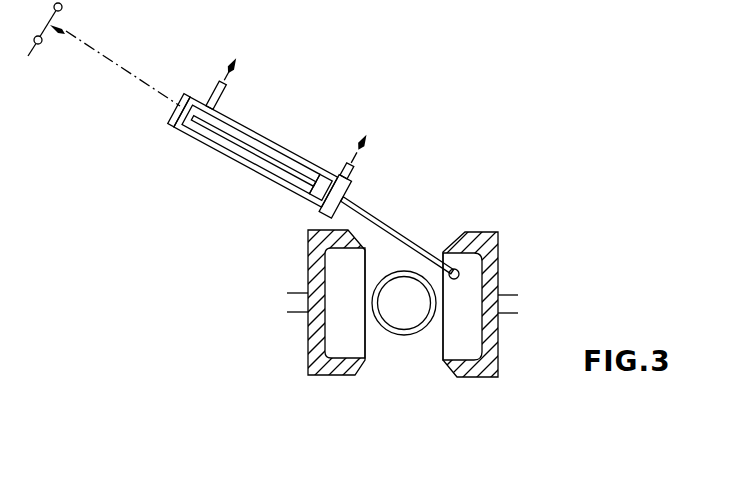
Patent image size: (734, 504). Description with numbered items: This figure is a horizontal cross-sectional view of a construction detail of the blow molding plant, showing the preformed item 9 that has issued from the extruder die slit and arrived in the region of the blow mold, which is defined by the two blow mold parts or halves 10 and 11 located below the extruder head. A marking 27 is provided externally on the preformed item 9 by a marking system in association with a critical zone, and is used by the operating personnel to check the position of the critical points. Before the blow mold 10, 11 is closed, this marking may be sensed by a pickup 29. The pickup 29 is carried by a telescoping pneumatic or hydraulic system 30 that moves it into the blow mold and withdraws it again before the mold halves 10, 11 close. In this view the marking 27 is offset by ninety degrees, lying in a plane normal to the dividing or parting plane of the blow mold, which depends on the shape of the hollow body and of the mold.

The preformed item 9 is at (405, 335).
The blow mold half 10 is at (337, 368).
The blow mold half 11 is at (487, 366).
The marking 27 is at (443, 303).
The pickup 29 is at (457, 268).
The telescoping pneumatic or hydraulic system 30 is at (287, 149).